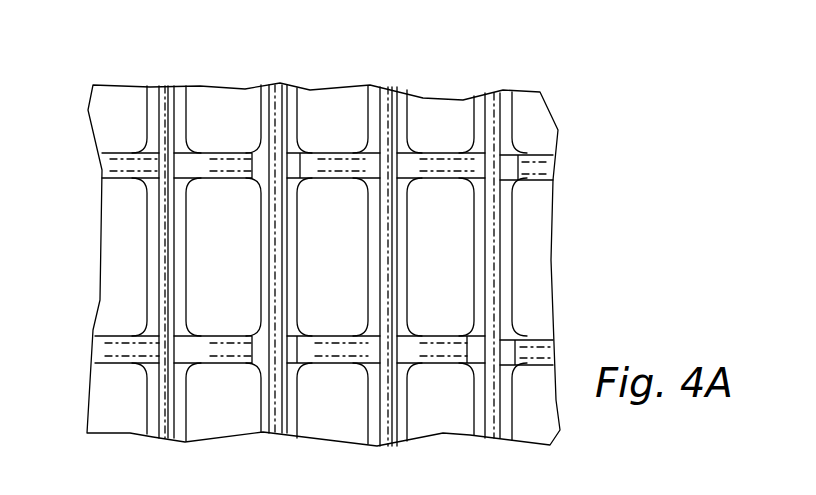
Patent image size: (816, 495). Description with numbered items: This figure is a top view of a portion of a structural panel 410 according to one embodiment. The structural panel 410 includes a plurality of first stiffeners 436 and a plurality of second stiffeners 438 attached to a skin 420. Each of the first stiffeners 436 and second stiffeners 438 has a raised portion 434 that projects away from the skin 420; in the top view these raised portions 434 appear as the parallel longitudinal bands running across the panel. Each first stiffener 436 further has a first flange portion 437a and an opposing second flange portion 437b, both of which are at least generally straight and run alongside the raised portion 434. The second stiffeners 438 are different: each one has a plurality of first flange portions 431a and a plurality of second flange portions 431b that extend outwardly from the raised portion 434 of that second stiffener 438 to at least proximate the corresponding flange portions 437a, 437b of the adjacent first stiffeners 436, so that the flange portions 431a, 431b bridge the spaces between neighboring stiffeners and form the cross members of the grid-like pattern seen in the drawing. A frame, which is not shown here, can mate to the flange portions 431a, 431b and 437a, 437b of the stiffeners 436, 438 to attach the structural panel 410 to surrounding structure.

The structural panel 410 is at (160, 58).
The skin 420 is at (113, 100).
The first flange portion 431a is at (323, 163).
The second flange portion 431b is at (443, 165).
The raised portion 434 is at (166, 437).
The first stiffener 436 is at (293, 103).
The first flange portion 437a is at (260, 100).
The second flange portion 437b is at (304, 100).
The second stiffener 438 is at (180, 100).